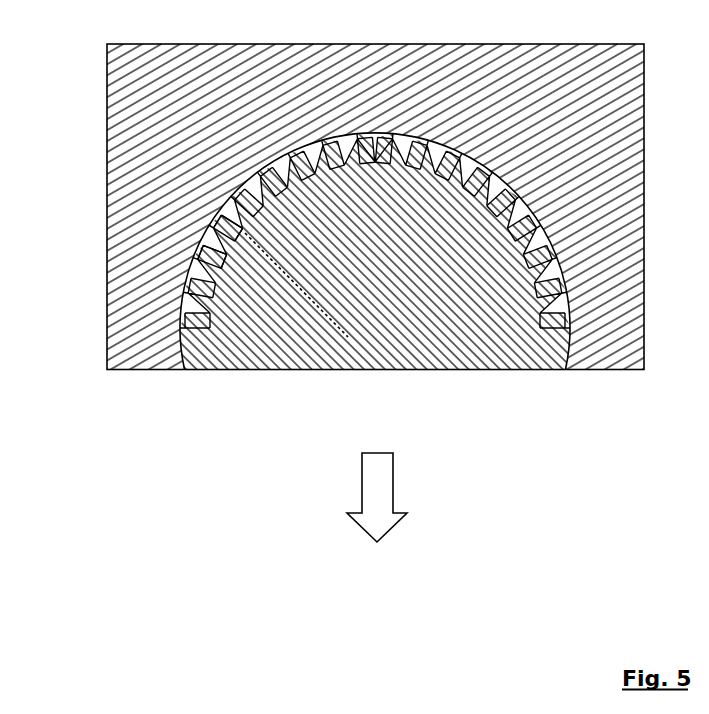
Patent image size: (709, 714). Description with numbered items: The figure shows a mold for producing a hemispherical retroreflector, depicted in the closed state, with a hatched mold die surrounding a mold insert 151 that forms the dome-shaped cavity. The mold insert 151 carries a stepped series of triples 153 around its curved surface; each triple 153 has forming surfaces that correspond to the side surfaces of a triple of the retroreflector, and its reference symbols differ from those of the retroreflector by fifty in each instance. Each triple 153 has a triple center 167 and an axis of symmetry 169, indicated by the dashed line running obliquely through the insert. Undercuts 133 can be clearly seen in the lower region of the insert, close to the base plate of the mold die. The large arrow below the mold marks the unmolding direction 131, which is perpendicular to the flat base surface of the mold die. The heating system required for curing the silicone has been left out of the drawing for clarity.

The unmolding direction 131 is at (362, 493).
The undercuts 133 is at (375, 290).
The mold insert 151 is at (420, 374).
The triple 153 is at (205, 257).
The triple center 167 is at (231, 253).
The axis of symmetry 169 is at (337, 330).